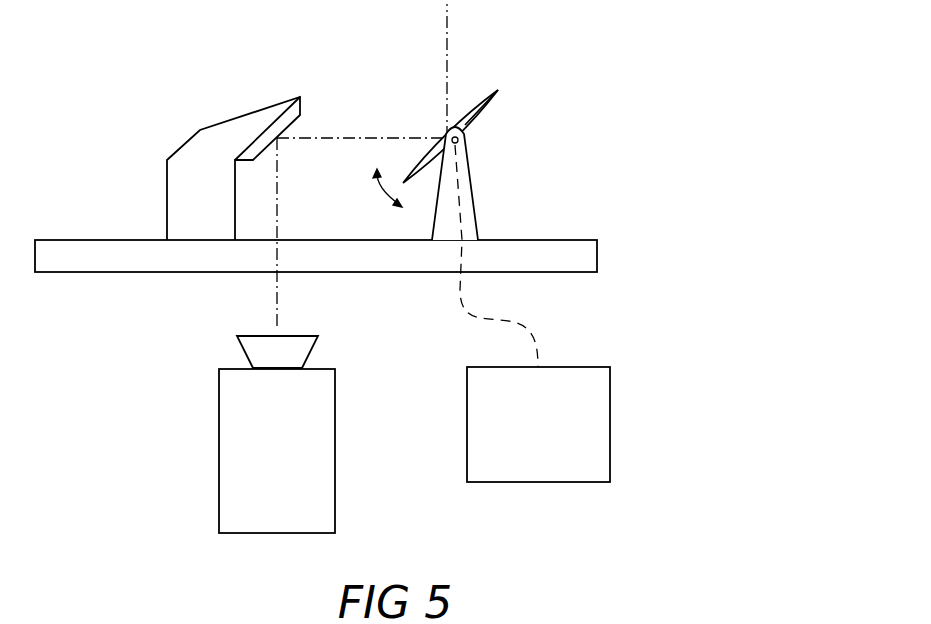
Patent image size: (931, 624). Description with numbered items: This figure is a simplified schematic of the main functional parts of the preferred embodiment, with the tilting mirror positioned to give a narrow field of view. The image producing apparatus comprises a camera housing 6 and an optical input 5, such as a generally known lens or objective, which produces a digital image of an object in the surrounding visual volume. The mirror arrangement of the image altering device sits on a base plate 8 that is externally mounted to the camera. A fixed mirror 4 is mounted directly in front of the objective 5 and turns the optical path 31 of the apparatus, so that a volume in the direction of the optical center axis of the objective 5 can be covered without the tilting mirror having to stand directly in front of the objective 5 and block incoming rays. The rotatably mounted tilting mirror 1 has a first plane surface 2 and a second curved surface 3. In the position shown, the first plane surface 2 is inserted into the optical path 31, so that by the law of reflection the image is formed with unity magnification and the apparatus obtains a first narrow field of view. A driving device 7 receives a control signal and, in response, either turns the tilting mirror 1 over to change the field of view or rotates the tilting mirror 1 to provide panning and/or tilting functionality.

The tilting mirror 1 is at (437, 157).
The first plane surface 2 is at (472, 113).
The second curved surface 3 is at (475, 128).
The fixed mirror 4 is at (285, 115).
The optical input 5 is at (267, 350).
The camera housing 6 is at (240, 420).
The driving device 7 is at (570, 462).
The base plate 8 is at (577, 250).
The optical path 31 is at (275, 312).